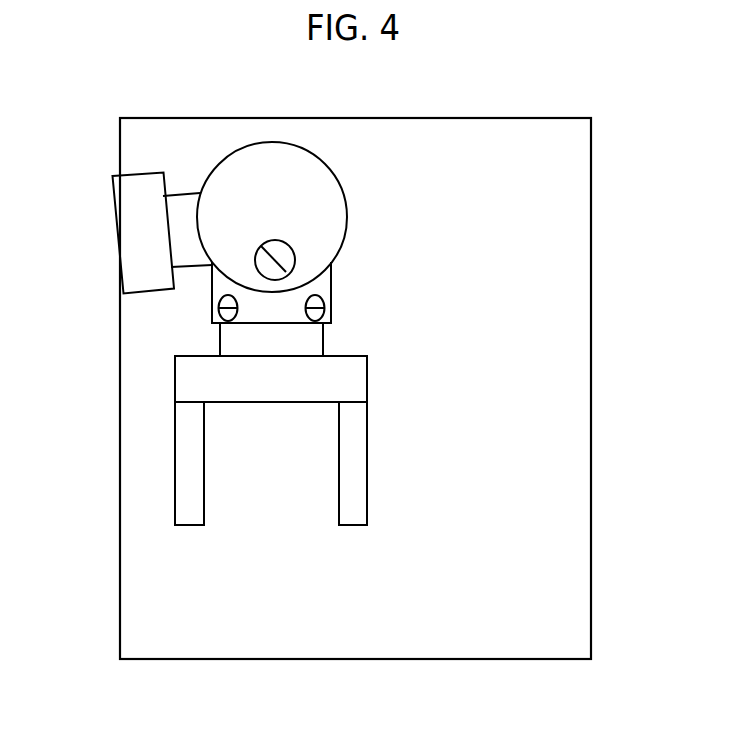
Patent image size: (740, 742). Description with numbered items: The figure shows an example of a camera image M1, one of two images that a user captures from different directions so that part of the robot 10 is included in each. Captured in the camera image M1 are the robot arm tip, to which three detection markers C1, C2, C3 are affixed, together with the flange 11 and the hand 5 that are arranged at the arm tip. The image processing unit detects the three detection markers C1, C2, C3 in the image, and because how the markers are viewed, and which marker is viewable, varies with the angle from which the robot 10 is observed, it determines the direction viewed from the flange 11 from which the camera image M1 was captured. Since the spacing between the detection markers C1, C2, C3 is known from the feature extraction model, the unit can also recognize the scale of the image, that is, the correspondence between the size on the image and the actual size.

The robot 10 is at (133, 163).
The flange 11 is at (323, 342).
The hand 5 is at (367, 497).
The detection marker C1 is at (288, 243).
The detection marker C2 is at (216, 317).
The detection marker C3 is at (326, 303).
The camera image M1 is at (508, 117).